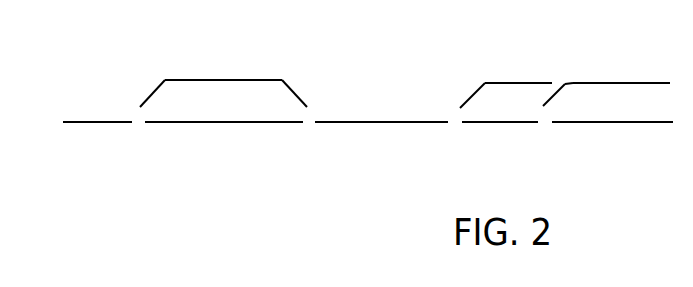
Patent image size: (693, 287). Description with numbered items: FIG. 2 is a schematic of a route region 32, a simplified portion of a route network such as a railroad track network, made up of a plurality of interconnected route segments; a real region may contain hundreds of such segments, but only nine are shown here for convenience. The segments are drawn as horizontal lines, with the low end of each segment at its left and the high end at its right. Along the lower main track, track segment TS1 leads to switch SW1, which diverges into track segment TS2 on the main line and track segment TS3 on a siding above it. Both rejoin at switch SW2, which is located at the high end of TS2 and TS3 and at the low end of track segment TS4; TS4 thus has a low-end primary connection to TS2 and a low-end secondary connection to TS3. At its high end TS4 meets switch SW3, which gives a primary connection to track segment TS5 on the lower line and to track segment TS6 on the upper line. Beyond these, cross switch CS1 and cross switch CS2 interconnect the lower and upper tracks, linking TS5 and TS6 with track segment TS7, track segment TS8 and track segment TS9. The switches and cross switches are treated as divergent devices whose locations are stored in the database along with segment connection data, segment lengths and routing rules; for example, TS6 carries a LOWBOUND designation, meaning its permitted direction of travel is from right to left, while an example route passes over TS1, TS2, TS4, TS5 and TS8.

The route region 32 is at (118, 67).
The track segment TS1 is at (97, 137).
The track segment TS2 is at (224, 137).
The track segment TS3 is at (223, 94).
The track segment TS4 is at (381, 137).
The track segment TS5 is at (500, 141).
The track segment TS6 is at (518, 96).
The track segment TS7 is at (579, 101).
The track segment TS8 is at (612, 141).
The track segment TS9 is at (621, 96).
The switch SW1 is at (143, 126).
The switch SW2 is at (305, 126).
The switch SW3 is at (457, 128).
The cross switch CS1 is at (550, 130).
The cross switch CS2 is at (563, 63).